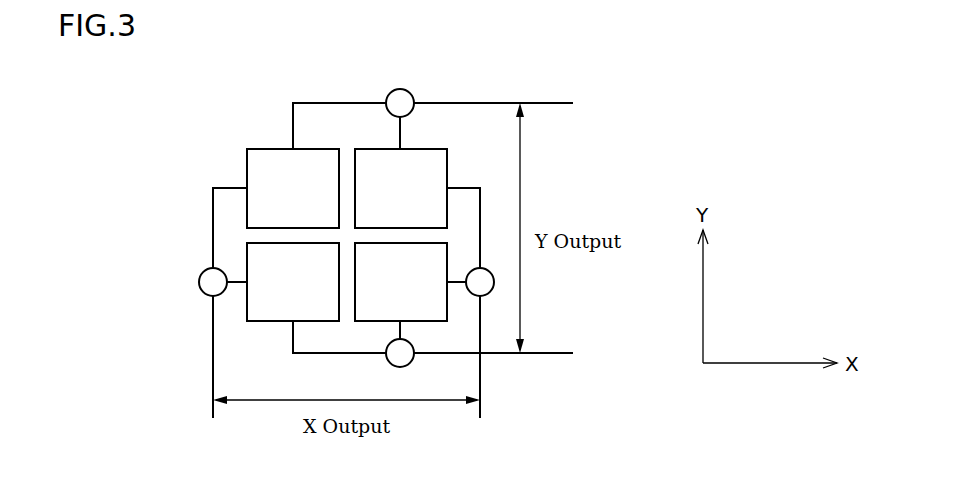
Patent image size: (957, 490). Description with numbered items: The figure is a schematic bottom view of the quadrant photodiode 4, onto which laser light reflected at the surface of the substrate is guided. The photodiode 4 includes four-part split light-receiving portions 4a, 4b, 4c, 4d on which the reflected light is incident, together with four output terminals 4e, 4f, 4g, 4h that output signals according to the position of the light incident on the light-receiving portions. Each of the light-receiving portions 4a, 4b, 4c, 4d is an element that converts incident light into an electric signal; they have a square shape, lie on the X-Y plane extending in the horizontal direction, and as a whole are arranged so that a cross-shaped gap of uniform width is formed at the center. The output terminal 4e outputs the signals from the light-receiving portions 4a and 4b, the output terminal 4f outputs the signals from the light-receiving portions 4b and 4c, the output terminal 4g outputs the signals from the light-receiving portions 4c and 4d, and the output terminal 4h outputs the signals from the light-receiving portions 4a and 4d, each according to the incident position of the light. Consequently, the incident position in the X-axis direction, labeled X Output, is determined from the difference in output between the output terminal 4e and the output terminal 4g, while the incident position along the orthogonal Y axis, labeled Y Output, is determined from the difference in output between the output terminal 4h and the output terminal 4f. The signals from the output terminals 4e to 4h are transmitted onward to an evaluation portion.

The photodiode 4 is at (199, 119).
The light-receiving portion 4a is at (268, 148).
The light-receiving portion 4b is at (268, 323).
The light-receiving portion 4c is at (428, 323).
The light-receiving portion 4d is at (427, 149).
The output terminal 4e is at (213, 350).
The output terminal 4f is at (560, 353).
The output terminal 4g is at (483, 410).
The output terminal 4h is at (547, 103).